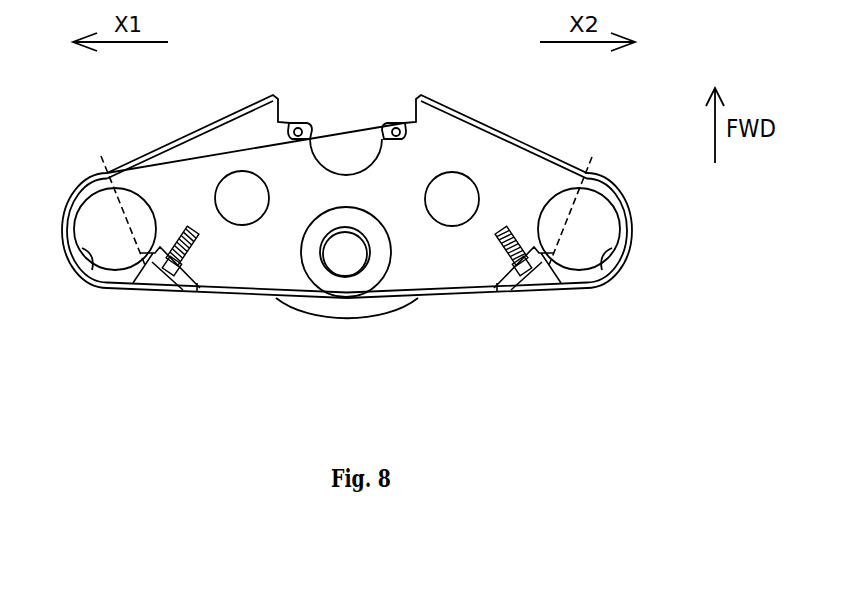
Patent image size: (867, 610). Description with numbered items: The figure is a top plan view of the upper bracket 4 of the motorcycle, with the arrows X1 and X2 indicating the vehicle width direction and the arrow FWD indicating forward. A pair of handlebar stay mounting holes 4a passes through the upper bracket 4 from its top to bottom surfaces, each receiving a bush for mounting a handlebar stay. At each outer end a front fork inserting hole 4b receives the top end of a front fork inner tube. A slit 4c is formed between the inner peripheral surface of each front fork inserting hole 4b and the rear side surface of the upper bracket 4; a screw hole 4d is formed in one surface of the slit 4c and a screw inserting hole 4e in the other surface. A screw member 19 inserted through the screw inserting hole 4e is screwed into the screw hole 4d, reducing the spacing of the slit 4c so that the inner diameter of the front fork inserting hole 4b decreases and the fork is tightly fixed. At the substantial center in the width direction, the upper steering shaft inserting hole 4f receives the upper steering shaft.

The upper bracket 4 is at (227, 140).
The handlebar stay mounting hole 4a is at (225, 178).
The front fork inserting hole 4b is at (93, 282).
The slit 4c is at (187, 281).
The screw hole 4d is at (192, 245).
The screw inserting hole 4e is at (348, 199).
The upper steering shaft inserting hole 4f is at (326, 262).
The screw member 19 is at (150, 282).